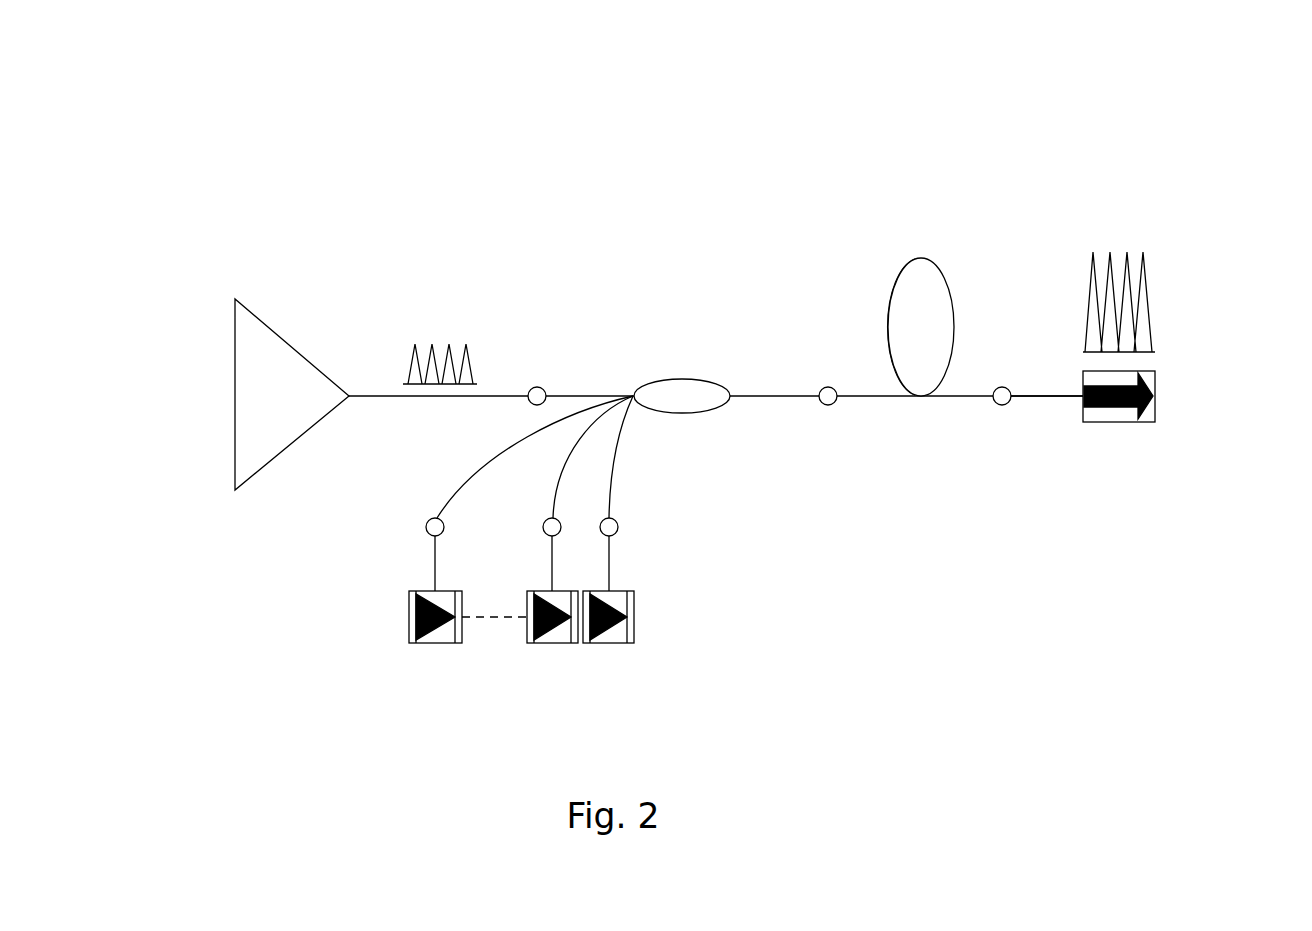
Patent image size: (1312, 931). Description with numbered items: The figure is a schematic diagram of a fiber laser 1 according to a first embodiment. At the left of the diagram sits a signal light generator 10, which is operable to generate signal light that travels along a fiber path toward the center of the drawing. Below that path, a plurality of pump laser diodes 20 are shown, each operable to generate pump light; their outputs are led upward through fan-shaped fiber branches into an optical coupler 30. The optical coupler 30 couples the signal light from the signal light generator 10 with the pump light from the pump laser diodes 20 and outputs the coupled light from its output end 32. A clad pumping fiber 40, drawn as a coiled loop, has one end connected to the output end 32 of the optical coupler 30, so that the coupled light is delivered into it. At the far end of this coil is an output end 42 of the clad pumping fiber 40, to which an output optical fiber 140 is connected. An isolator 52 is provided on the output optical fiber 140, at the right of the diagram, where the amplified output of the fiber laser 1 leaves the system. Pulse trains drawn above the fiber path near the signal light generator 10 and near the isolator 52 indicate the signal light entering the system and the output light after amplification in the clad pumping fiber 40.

The fiber laser 1 is at (1227, 127).
The signal light generator 10 is at (235, 363).
The pump laser diodes 20 is at (409, 618).
The optical coupler 30 is at (685, 378).
The output end of the optical coupler 32 is at (828, 408).
The clad pumping fiber 40 is at (945, 283).
The output end of the clad pumping fiber 42 is at (1002, 385).
The isolator 52 is at (1117, 423).
The output optical fiber 140 is at (1045, 400).